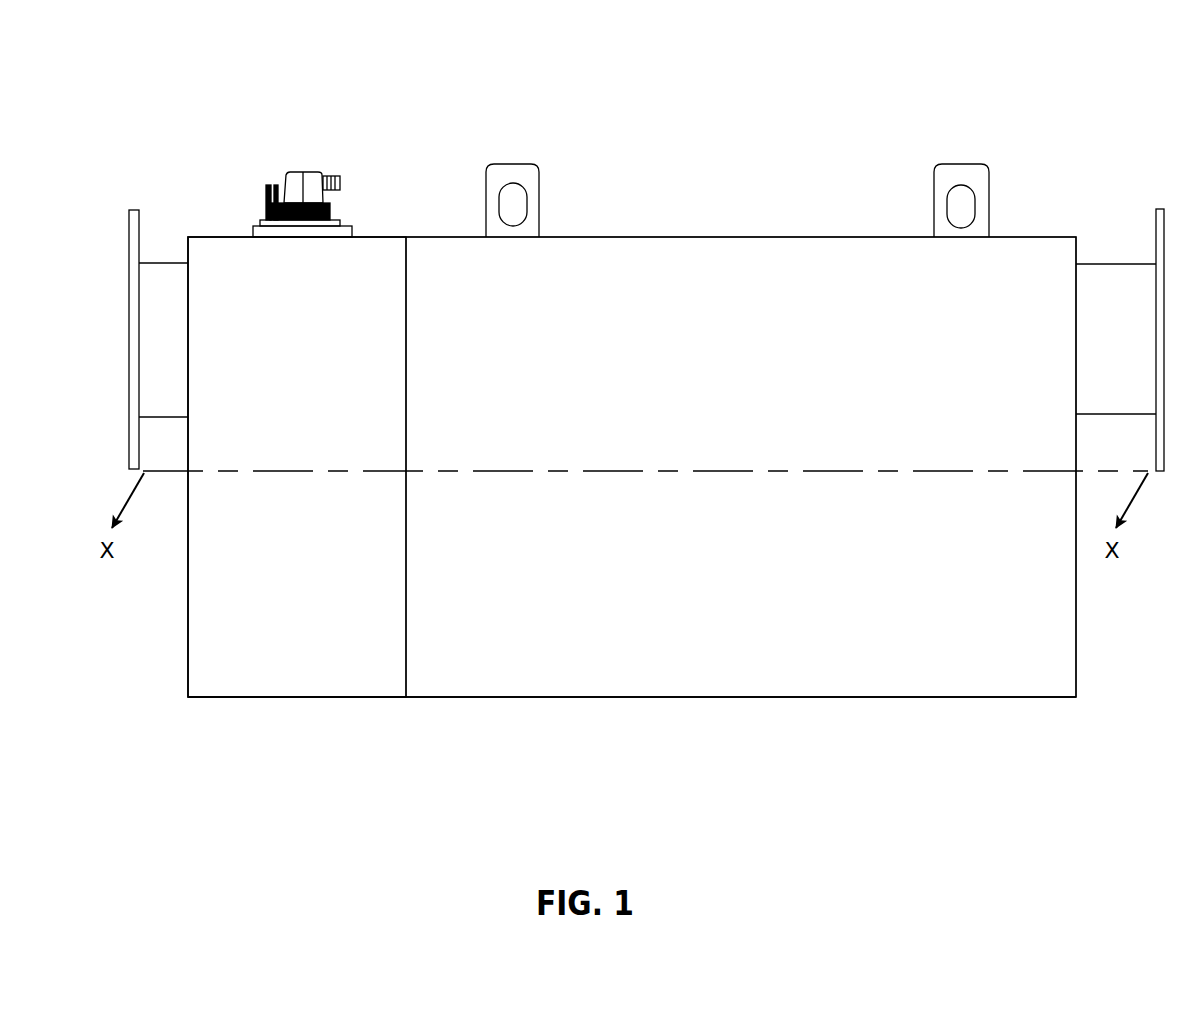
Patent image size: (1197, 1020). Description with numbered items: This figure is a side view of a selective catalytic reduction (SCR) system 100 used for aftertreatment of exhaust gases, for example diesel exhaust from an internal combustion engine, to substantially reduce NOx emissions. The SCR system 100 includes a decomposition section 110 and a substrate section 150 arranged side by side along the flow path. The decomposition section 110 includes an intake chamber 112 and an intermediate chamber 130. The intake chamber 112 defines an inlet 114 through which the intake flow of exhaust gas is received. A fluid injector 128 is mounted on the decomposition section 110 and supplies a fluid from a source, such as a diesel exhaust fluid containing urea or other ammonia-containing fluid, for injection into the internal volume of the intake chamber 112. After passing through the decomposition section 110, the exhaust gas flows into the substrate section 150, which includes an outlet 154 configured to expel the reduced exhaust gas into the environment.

The selective catalytic reduction (SCR) system 100 is at (192, 92).
The decomposition section 110 is at (374, 226).
The intake chamber 112 is at (237, 265).
The inlet 114 is at (144, 315).
The fluid injector 128 is at (303, 186).
The intermediate chamber 130 is at (291, 678).
The substrate section 150 is at (745, 226).
The outlet 154 is at (1113, 295).